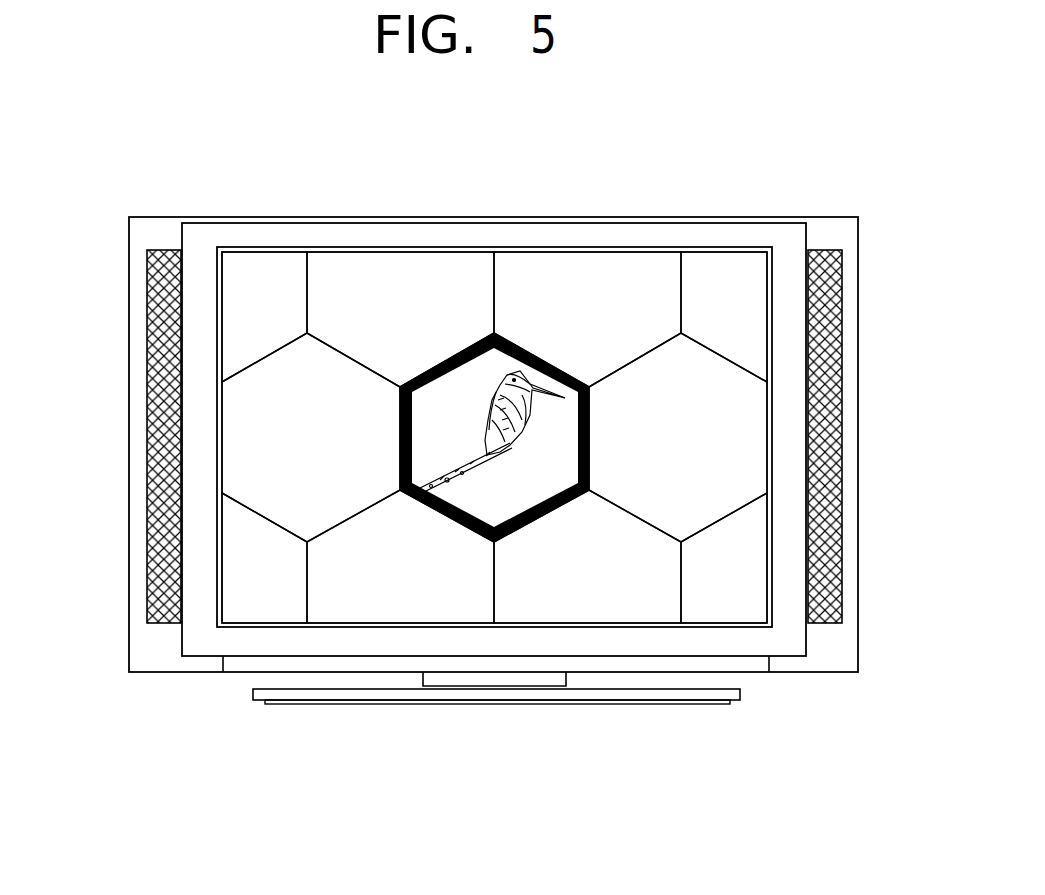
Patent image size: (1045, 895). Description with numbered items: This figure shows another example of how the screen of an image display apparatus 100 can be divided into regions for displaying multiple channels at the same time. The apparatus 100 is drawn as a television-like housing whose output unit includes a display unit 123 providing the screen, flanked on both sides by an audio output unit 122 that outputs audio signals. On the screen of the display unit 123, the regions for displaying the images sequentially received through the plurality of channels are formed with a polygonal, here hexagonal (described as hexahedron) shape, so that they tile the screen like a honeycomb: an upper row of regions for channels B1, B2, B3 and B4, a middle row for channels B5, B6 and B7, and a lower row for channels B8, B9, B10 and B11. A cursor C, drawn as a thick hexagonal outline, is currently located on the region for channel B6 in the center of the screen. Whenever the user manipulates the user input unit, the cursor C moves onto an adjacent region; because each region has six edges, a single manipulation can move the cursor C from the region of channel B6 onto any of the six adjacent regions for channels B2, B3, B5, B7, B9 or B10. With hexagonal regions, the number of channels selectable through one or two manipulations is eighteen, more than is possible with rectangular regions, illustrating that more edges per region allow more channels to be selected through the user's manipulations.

The image display apparatus 100 is at (160, 208).
The audio output unit 122 is at (150, 317).
The display unit 123 is at (253, 249).
The channel B1 is at (285, 263).
The channel B2 is at (405, 263).
The channel B3 is at (585, 263).
The channel B4 is at (733, 263).
The channel B5 is at (237, 448).
The channel B6 is at (475, 500).
The channel B7 is at (758, 441).
The channel B8 is at (245, 610).
The channel B9 is at (382, 610).
The channel B10 is at (597, 610).
The channel B11 is at (715, 610).
The cursor C is at (475, 340).